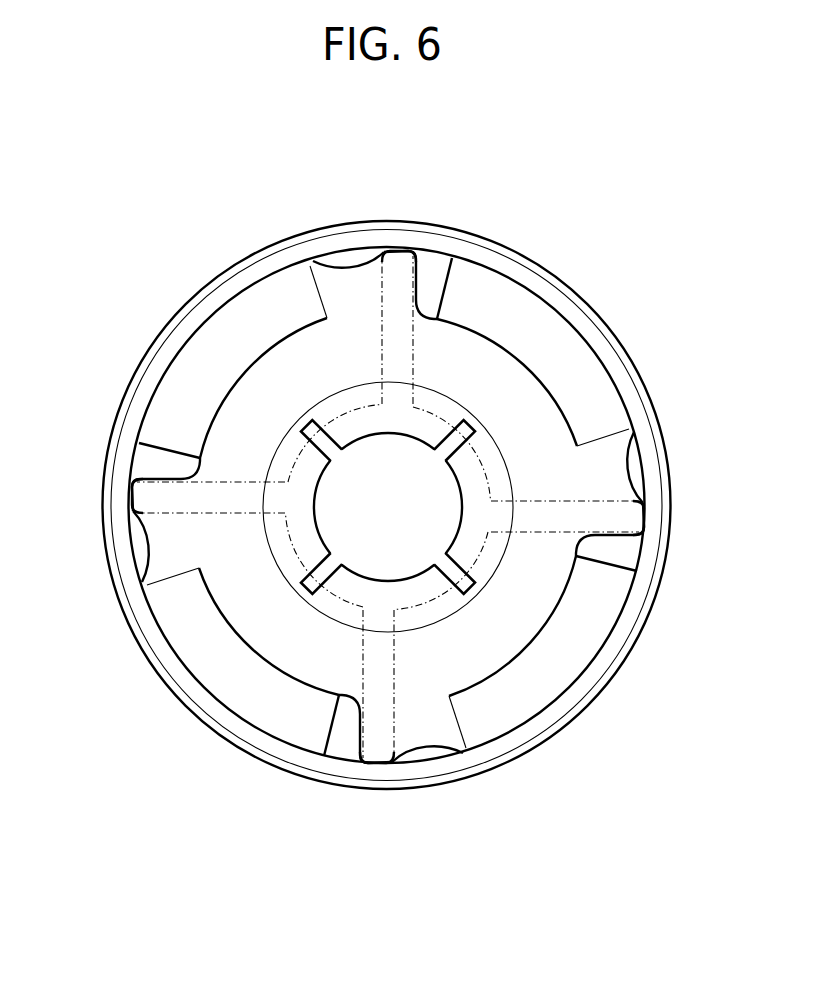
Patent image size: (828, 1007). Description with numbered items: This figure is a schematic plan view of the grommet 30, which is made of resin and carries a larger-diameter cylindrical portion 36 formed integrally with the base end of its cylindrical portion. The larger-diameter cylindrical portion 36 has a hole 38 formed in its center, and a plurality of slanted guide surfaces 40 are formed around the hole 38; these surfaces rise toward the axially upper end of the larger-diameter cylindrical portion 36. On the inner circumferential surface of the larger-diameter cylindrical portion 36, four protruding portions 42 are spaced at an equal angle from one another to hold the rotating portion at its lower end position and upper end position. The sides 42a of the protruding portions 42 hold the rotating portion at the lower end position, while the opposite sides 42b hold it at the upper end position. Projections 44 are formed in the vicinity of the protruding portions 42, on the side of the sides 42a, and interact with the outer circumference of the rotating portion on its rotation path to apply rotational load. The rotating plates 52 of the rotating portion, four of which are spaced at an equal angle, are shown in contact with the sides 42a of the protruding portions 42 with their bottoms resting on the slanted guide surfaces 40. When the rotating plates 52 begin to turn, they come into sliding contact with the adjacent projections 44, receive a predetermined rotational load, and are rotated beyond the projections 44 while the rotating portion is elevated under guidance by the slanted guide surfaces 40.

The grommet 30 is at (494, 110).
The larger-diameter cylindrical portion 36 is at (647, 357).
The hole 38 is at (415, 562).
The slanted guide surfaces 40 is at (545, 320).
The protruding portions 42 is at (433, 262).
The sides of the protruding portions 42a is at (410, 278).
The sides of the protruding portions 42b is at (447, 282).
The projections 44 is at (355, 258).
The rotating plates 52 is at (541, 500).